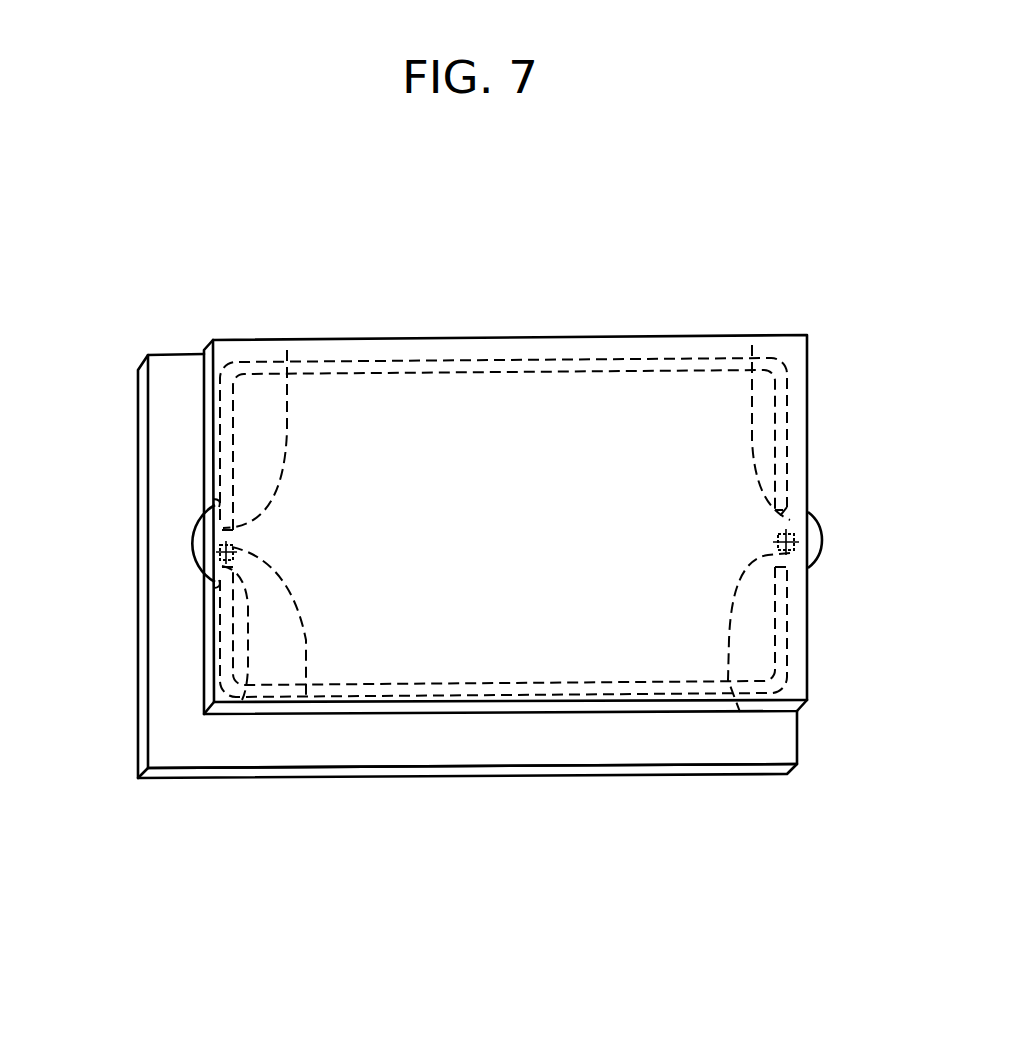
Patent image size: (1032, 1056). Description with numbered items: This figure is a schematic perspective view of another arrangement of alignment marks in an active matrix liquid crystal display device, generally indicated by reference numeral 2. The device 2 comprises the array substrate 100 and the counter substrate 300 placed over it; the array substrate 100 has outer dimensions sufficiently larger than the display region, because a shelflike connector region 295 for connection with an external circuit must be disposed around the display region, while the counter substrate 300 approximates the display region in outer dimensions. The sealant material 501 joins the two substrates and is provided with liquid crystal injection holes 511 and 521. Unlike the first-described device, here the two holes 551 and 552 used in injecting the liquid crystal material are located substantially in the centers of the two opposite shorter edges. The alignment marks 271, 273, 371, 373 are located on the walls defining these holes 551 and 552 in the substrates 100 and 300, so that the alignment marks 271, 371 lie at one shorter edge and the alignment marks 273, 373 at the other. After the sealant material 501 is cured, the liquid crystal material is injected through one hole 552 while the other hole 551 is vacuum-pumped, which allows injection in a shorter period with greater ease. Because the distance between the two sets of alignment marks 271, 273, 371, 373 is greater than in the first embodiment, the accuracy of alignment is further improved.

The liquid crystal display device 2 is at (483, 192).
The array substrate 100 is at (535, 767).
The counter substrate 300 is at (627, 707).
The connector region 295 is at (462, 738).
The sealant material 501 is at (487, 363).
The liquid crystal injection hole 511 is at (287, 350).
The liquid crystal injection hole 521 is at (752, 345).
The alignment mark 271 is at (242, 700).
The alignment mark 371 is at (306, 700).
The alignment mark 273 is at (820, 560).
The alignment mark 373 is at (740, 712).
The hole 551 is at (193, 550).
The hole 552 is at (810, 523).